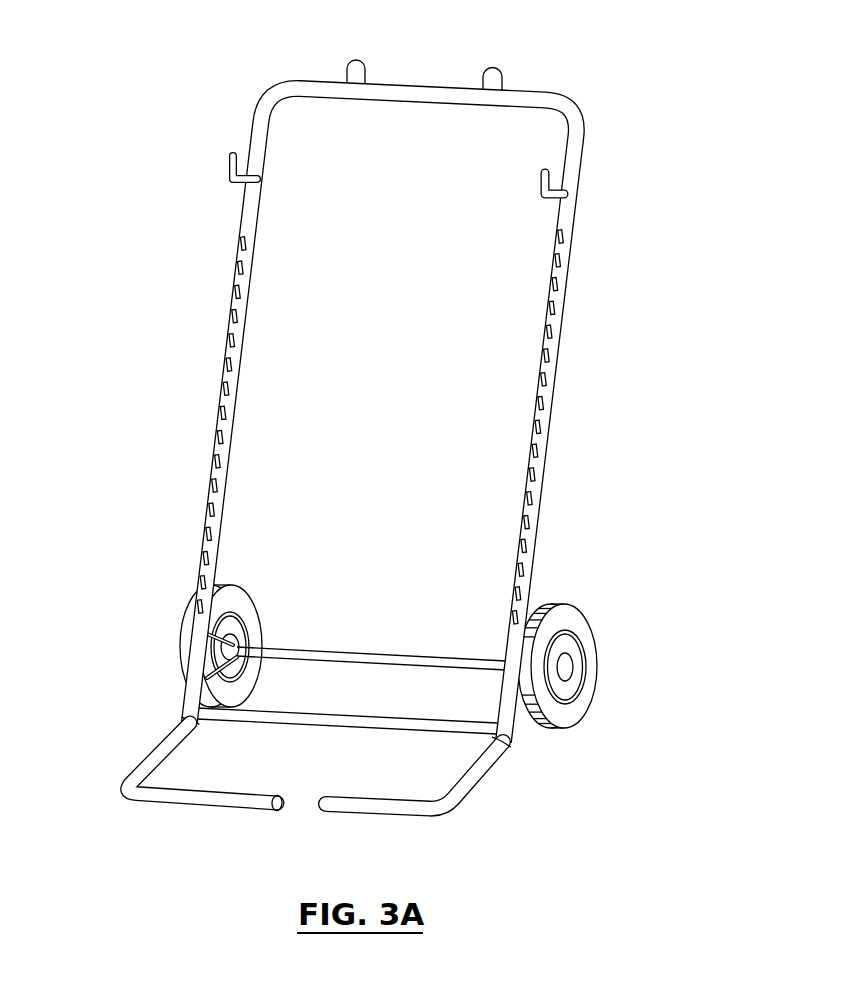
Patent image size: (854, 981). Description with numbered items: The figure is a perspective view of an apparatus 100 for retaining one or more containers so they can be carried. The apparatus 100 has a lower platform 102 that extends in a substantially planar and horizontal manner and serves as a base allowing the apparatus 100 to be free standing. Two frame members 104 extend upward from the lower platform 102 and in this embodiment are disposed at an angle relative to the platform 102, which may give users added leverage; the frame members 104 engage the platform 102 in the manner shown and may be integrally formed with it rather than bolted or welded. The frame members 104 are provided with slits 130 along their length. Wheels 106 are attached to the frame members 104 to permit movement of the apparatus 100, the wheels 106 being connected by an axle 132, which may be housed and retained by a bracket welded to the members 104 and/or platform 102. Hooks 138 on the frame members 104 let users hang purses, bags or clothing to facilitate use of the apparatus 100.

The apparatus 100 is at (365, 409).
The lower platform 102 is at (112, 748).
The frame members 104 is at (395, 403).
The wheels 106 is at (253, 600).
The slits 130 is at (237, 317).
The axle 132 is at (399, 658).
The hooks 138 is at (233, 158).